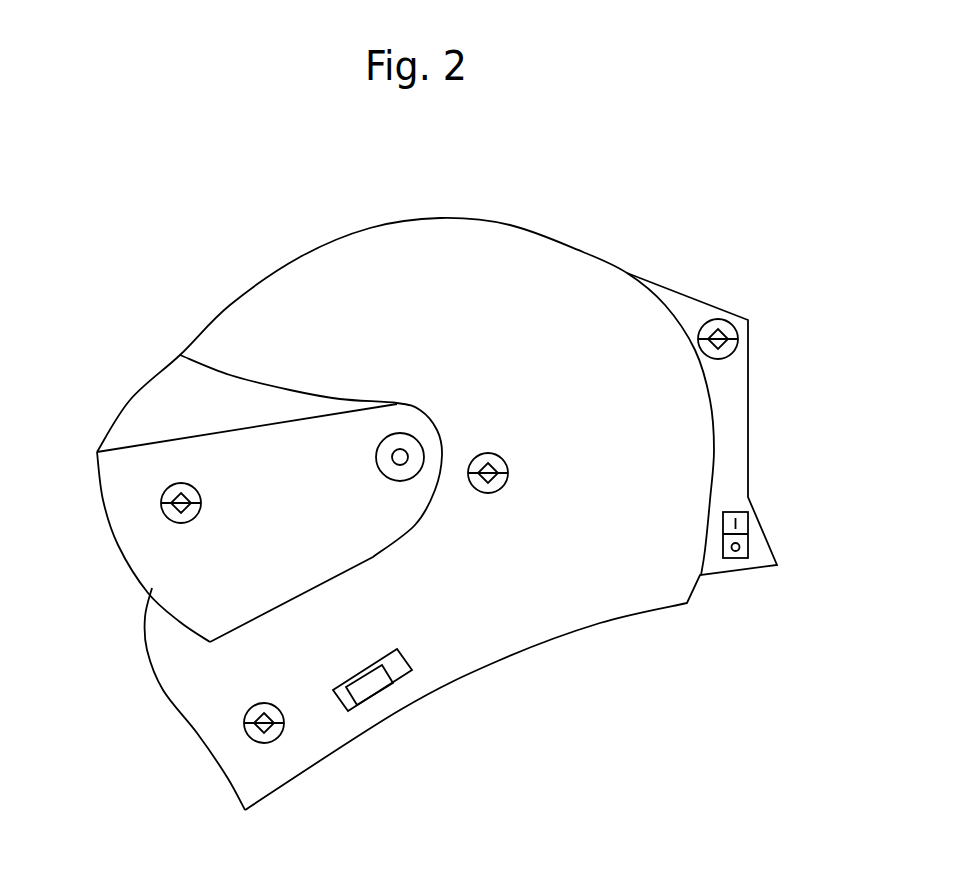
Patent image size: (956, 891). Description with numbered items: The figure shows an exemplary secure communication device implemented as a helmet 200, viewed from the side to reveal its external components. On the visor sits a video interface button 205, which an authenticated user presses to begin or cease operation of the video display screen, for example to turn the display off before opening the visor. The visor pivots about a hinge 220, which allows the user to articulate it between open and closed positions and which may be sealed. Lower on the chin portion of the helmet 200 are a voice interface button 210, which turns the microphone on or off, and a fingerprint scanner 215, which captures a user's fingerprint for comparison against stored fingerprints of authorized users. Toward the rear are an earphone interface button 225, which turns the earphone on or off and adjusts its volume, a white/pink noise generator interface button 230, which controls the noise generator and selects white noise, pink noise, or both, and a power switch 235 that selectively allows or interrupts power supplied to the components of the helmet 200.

The helmet 200 is at (92, 194).
The video interface button 205 is at (163, 495).
The voice interface button 210 is at (245, 717).
The fingerprint scanner 215 is at (360, 700).
The hinge 220 is at (393, 443).
The earphone interface button 225 is at (488, 453).
The white/pink noise generator interface button 230 is at (730, 331).
The power switch 235 is at (748, 526).